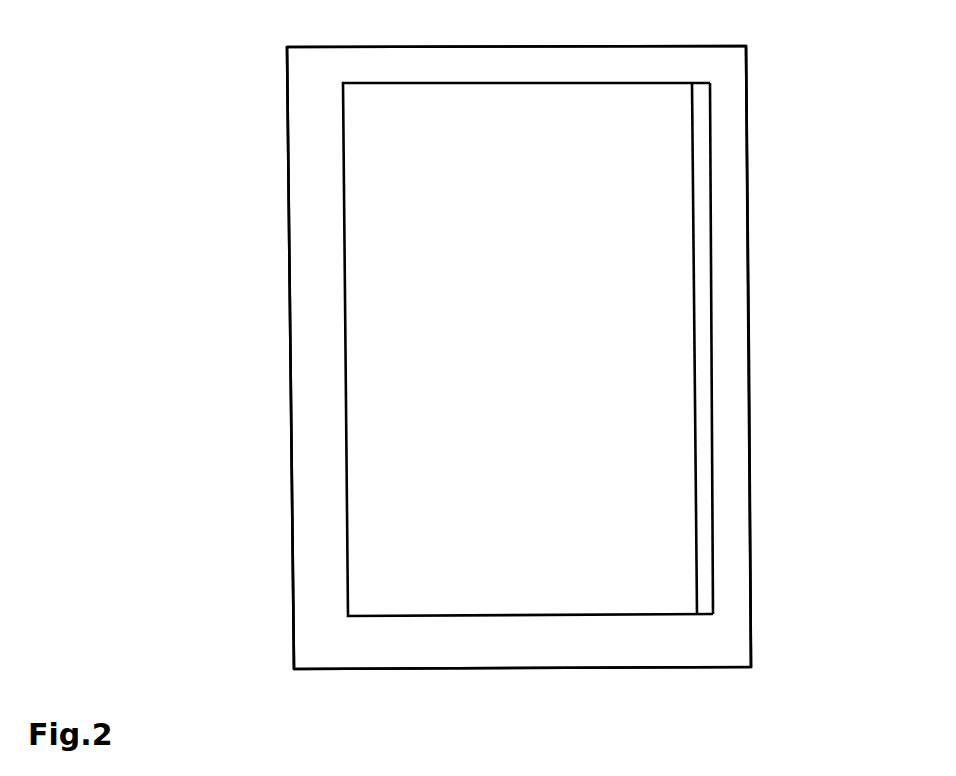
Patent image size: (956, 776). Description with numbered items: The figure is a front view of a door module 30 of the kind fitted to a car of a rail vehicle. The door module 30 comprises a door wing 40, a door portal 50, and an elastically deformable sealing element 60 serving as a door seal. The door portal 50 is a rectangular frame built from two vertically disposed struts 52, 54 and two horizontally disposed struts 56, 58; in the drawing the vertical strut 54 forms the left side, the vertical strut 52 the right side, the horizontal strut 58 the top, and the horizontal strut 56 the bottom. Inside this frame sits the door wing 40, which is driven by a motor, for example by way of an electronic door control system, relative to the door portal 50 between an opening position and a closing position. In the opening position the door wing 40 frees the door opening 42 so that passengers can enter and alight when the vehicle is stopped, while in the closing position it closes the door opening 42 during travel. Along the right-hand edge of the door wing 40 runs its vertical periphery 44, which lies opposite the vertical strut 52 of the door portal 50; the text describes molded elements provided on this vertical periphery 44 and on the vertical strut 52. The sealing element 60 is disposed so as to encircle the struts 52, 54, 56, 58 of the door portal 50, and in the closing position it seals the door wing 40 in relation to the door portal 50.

The door module 30 is at (201, 112).
The door wing 40 is at (398, 372).
The door opening 42 is at (663, 232).
The vertical periphery 44 is at (698, 390).
The door portal 50 is at (738, 585).
The vertical strut 52 is at (733, 111).
The vertical strut 54 is at (302, 226).
The horizontal strut 56 is at (562, 657).
The horizontal strut 58 is at (512, 53).
The sealing element 60 is at (702, 318).